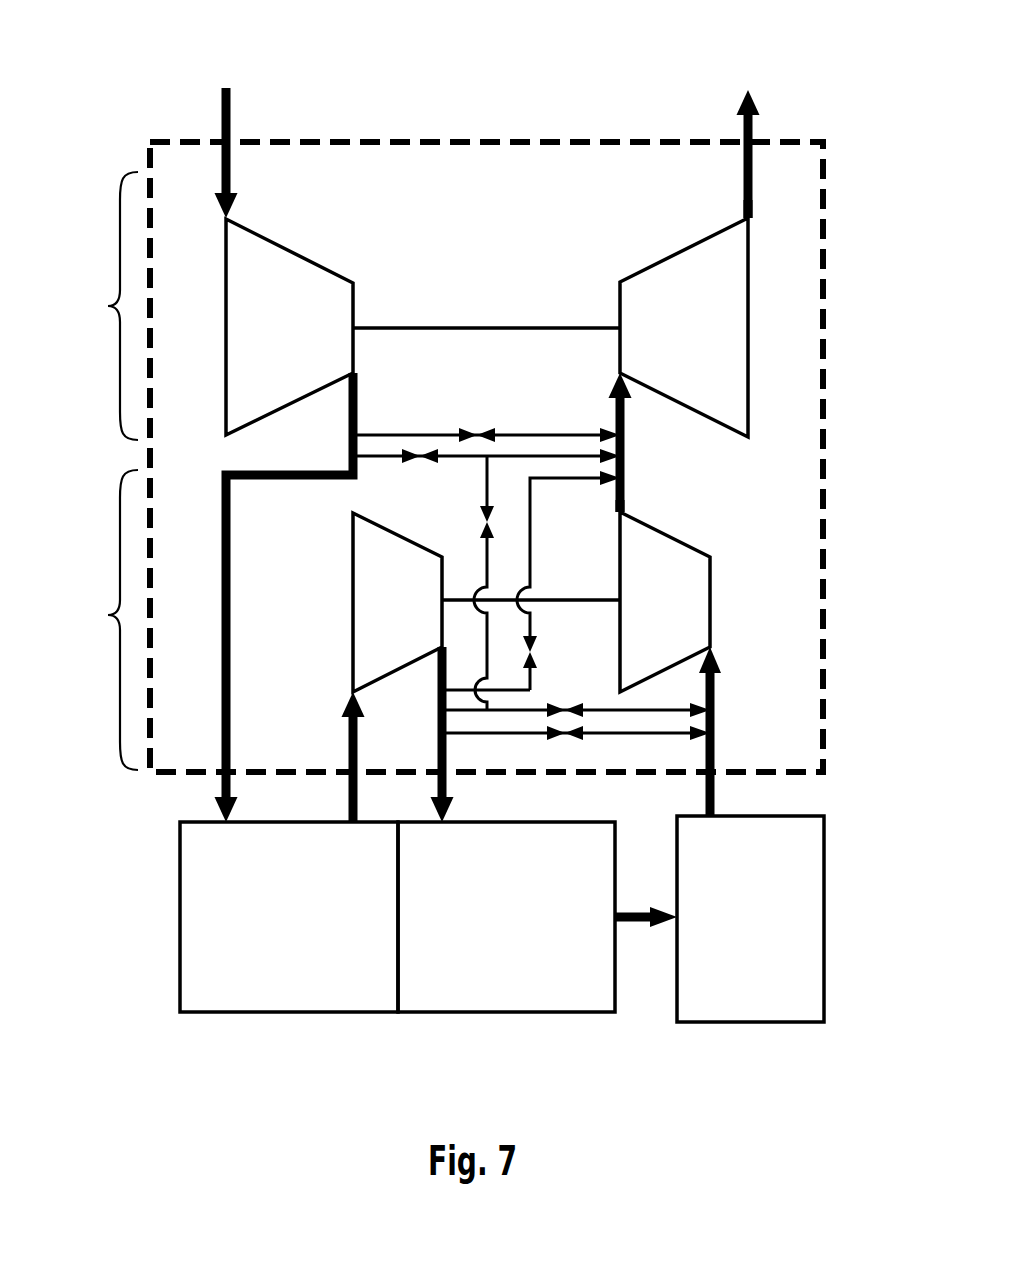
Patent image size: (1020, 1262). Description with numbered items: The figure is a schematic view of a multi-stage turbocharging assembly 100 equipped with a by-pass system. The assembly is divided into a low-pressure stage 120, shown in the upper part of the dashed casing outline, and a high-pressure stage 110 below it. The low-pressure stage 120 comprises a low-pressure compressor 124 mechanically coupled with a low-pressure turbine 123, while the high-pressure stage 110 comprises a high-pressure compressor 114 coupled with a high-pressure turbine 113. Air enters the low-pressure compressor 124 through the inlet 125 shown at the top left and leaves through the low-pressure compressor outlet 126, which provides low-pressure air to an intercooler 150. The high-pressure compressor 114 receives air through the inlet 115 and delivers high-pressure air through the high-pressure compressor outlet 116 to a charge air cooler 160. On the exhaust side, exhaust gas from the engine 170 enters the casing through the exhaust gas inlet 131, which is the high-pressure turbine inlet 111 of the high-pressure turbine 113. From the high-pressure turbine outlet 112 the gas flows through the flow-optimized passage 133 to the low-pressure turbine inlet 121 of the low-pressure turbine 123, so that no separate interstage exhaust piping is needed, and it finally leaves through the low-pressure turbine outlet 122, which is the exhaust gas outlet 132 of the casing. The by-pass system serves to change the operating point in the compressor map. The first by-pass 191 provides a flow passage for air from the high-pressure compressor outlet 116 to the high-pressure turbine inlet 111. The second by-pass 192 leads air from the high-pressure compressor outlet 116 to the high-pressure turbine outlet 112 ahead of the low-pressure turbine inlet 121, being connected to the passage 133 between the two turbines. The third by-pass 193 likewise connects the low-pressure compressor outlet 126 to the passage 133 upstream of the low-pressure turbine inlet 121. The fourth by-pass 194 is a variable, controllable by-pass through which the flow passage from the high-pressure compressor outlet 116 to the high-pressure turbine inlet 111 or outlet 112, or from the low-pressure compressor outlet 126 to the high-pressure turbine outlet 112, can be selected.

The multi-stage turbocharging assembly 100 is at (495, 118).
The high-pressure stage 110 is at (87, 626).
The low-pressure stage 120 is at (92, 336).
The high-pressure turbine inlet 111 is at (713, 680).
The high-pressure turbine outlet 112 is at (618, 512).
The high-pressure turbine 113 is at (687, 620).
The high-pressure compressor 114 is at (420, 625).
The air inlet line 115 is at (349, 715).
The high-pressure compressor outlet 116 is at (437, 668).
The low-pressure turbine inlet 121 is at (617, 392).
The low-pressure turbine outlet 122 is at (752, 205).
The low-pressure turbine 123 is at (705, 339).
The low-pressure compressor 124 is at (315, 346).
The air inlet 125 is at (231, 192).
The low-pressure compressor outlet 126 is at (357, 380).
The exhaust gas inlet 131 is at (713, 690).
The exhaust gas outlet 132 is at (752, 205).
The passage 133 is at (626, 473).
The intercooler 150 is at (316, 940).
The charge air cooler 160 is at (520, 940).
The engine 170 is at (772, 942).
The first by-pass 191 is at (567, 752).
The second by-pass 192 is at (548, 652).
The third by-pass 193 is at (478, 415).
The fourth by-pass 194 is at (465, 546).